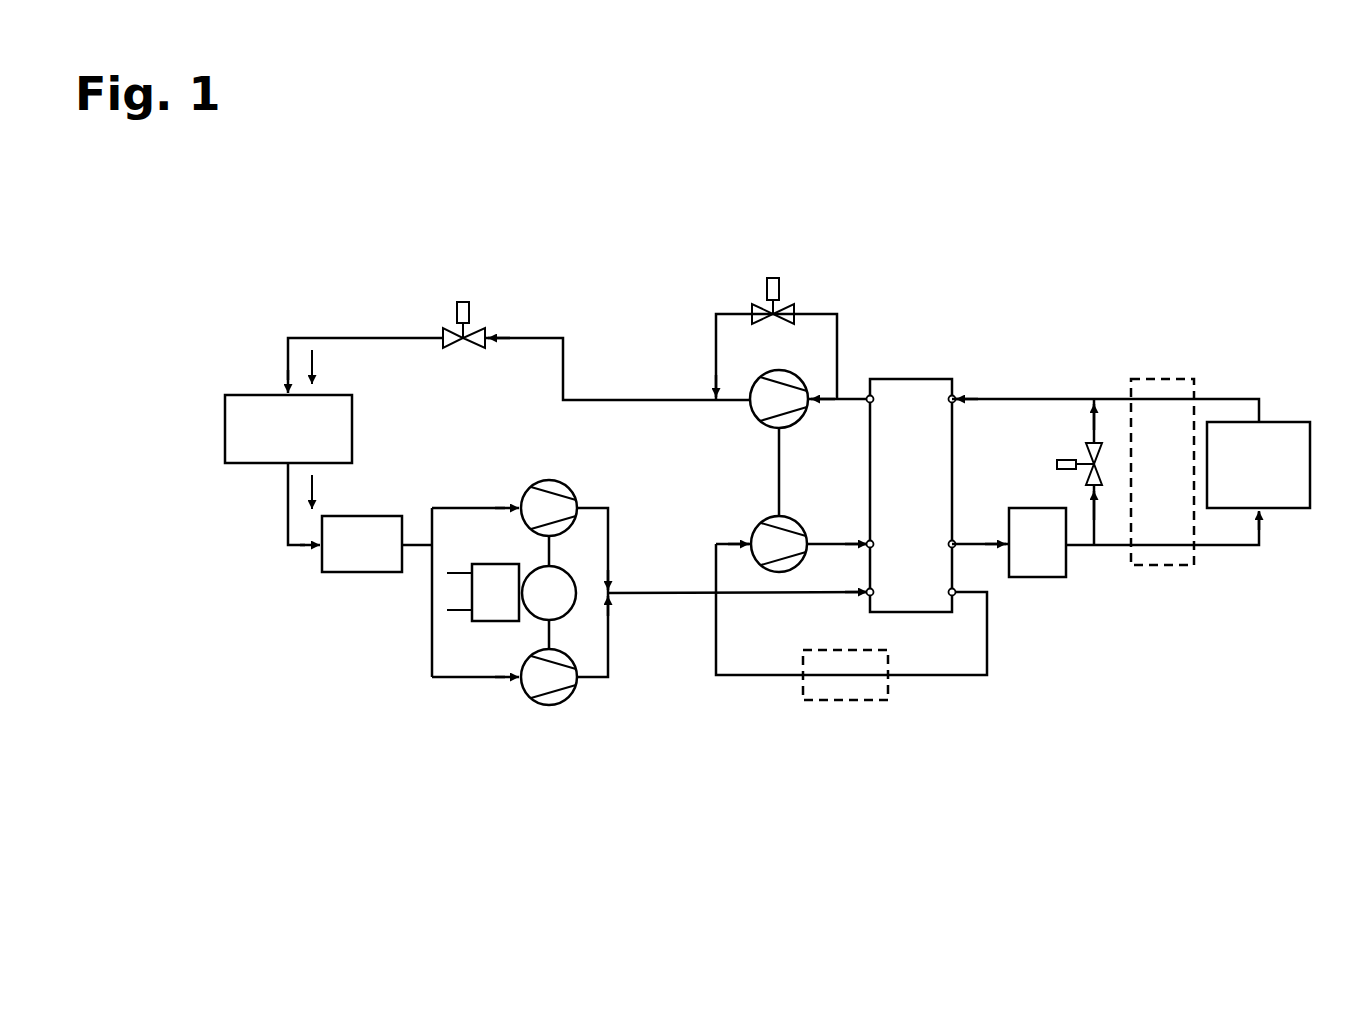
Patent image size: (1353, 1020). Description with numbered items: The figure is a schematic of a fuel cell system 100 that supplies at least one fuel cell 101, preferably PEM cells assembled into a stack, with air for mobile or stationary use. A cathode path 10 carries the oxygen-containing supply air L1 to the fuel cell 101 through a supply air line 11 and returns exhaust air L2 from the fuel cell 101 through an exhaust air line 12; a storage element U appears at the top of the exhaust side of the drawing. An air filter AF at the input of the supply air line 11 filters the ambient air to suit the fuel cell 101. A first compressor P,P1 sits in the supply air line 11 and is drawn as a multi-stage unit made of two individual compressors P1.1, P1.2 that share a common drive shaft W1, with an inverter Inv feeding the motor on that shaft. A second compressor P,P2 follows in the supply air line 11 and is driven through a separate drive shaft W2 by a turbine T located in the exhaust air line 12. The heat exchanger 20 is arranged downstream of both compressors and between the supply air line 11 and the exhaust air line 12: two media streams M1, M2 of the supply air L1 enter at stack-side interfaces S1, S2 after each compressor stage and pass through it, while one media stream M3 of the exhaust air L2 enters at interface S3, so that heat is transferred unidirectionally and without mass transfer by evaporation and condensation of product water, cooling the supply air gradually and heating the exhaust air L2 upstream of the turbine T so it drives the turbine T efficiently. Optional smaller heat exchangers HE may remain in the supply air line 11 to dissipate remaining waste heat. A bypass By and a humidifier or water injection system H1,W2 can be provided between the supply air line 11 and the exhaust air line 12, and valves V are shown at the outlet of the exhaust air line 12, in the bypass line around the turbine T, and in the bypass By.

The fuel cell system 100 is at (1170, 221).
The cathode path 10 is at (240, 316).
The exhaust air line 12 is at (318, 338).
The supply air line 11 is at (288, 500).
The storage tank U is at (225, 430).
The exhaust air L2 is at (318, 355).
The supply air L1 is at (318, 478).
The air filter AF is at (367, 572).
The valve V is at (470, 328).
The turbine T is at (752, 414).
The drive shaft W2 is at (806, 472).
The second compressor P,P2 is at (771, 578).
The heat exchanger 20 is at (910, 379).
The media stream of the exhaust air M3 is at (920, 415).
The media stream of the supply air M2 is at (912, 529).
The media stream of the supply air M1 is at (926, 606).
The stack interface S3 is at (955, 396).
The stack interface S2 is at (872, 541).
The stack interface S1 is at (872, 589).
The separate heat exchanger HE is at (1045, 577).
The fuel cell 101 is at (1295, 422).
The bypass By is at (1096, 428).
The humidifier or water injection system H1,W2 is at (1148, 379).
The first compressor P,P1 is at (495, 613).
The individual compressor P1.1 is at (528, 490).
The individual compressor P1.2 is at (549, 705).
The common drive shaft W1 is at (562, 592).
The inverter Inv is at (483, 592).